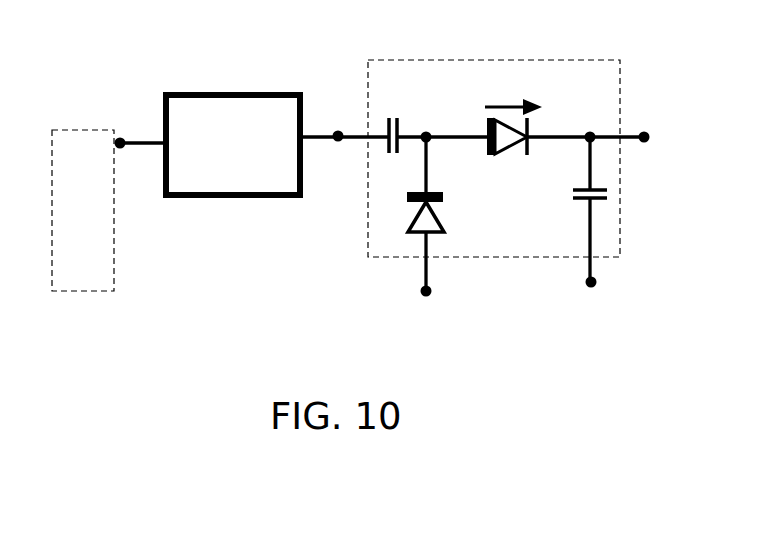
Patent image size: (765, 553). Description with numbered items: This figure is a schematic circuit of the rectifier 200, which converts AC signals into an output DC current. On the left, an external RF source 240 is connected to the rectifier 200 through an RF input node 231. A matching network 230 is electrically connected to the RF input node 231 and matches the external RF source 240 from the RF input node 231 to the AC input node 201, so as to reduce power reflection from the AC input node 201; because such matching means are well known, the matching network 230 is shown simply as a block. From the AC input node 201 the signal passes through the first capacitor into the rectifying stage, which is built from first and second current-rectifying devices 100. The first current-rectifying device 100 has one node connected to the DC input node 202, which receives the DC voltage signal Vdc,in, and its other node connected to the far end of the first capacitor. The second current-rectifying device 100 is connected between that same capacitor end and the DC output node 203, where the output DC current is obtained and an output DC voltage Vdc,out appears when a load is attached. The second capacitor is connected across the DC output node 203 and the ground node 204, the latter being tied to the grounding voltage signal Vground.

The rectifier 200 is at (387, 170).
The matching network 230 is at (233, 145).
The RF input node 231 is at (141, 129).
The external RF source 240 is at (83, 210).
The AC input node 201 is at (344, 121).
The current-rectifying device 100 is at (456, 177).
The DC input node 202 is at (450, 268).
The DC output node 203 is at (597, 123).
The ground node 204 is at (615, 246).